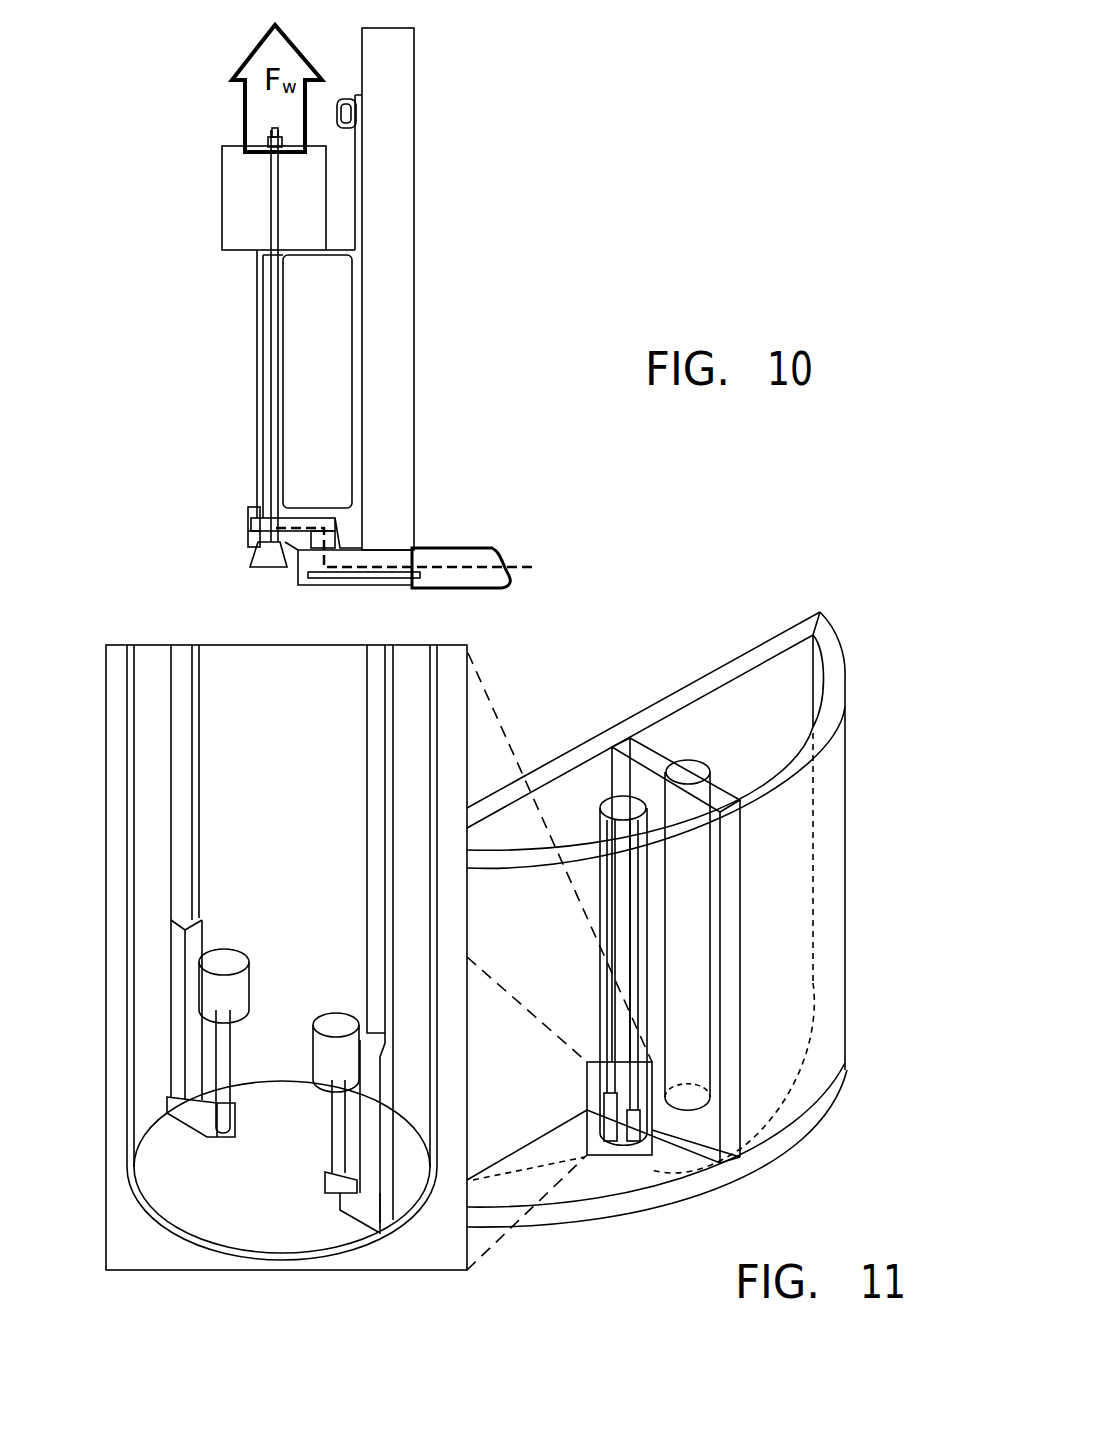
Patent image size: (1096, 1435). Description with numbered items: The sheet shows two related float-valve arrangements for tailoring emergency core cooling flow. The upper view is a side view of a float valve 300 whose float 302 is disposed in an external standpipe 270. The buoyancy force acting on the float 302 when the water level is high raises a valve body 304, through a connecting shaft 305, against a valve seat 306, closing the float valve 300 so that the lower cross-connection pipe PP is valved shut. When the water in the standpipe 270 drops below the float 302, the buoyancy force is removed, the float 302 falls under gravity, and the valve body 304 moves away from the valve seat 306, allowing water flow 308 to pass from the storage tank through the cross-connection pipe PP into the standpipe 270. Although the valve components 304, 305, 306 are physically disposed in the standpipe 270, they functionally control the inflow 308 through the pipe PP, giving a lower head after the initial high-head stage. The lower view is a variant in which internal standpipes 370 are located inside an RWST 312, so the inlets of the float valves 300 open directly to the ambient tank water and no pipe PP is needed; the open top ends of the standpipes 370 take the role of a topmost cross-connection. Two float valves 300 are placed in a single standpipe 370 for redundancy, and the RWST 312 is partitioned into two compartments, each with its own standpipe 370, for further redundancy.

In FIG. 10, the external standpipe 270 is at (414, 250).
In FIG. 10, the float valve 300 is at (230, 320).
In FIG. 11, the float valve 300 is at (308, 1117).
In FIG. 10, the float 302 is at (243, 196).
In FIG. 10, the valve body 304 is at (260, 565).
In FIG. 10, the connecting shaft 305 is at (272, 397).
In FIG. 10, the valve seat 306 is at (250, 533).
In FIG. 10, the water flow 308 is at (443, 565).
In FIG. 10, the cross-connection pipe PP is at (490, 548).
In FIG. 11, the RWST 312 is at (848, 862).
In FIG. 11, the internal standpipe 370 is at (124, 768).